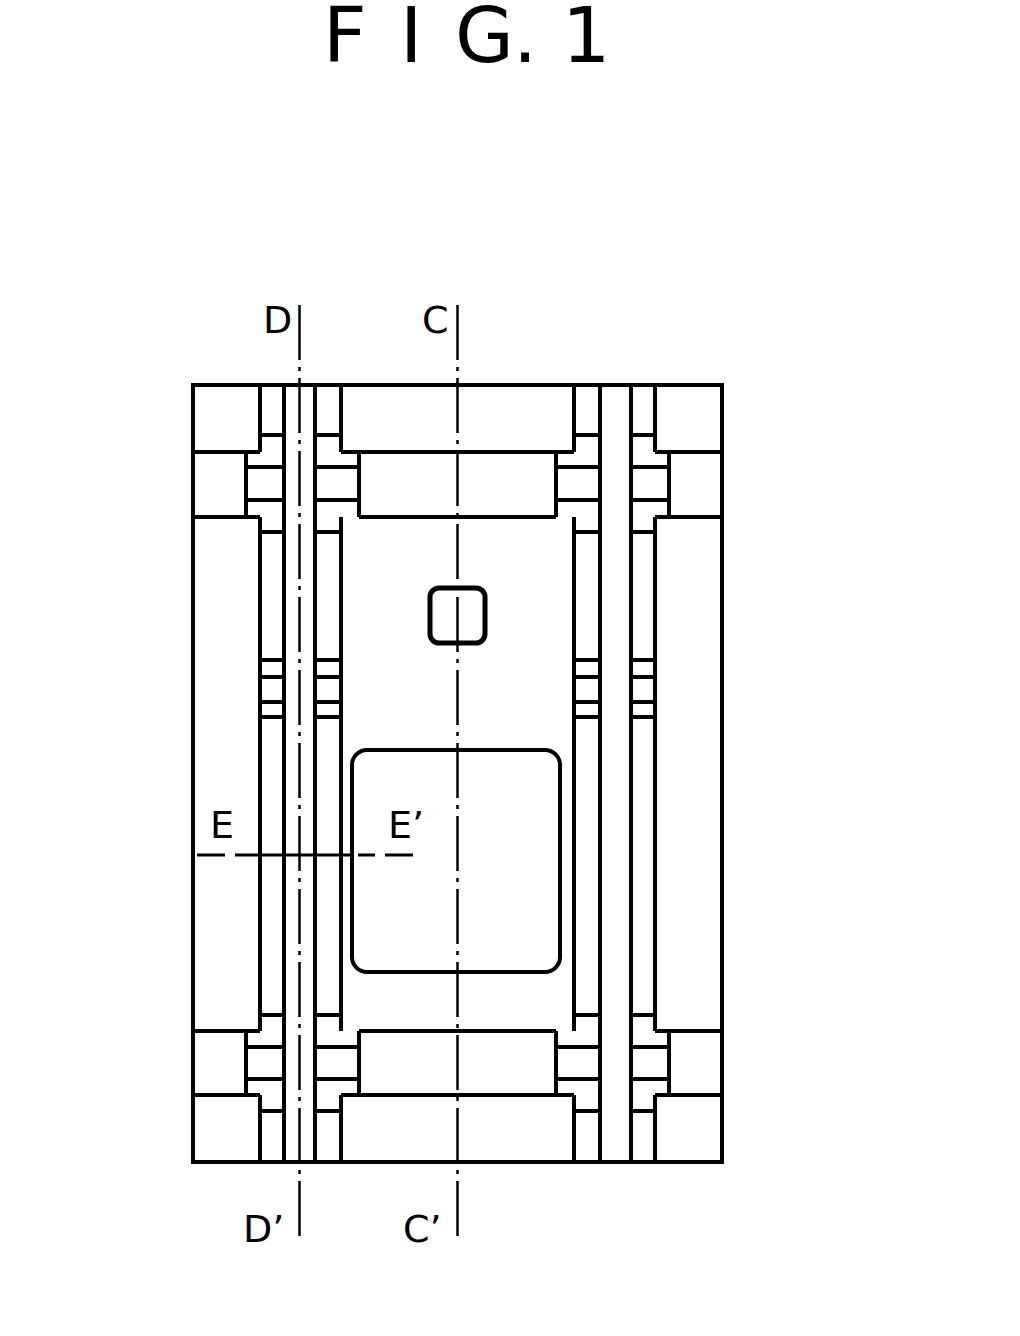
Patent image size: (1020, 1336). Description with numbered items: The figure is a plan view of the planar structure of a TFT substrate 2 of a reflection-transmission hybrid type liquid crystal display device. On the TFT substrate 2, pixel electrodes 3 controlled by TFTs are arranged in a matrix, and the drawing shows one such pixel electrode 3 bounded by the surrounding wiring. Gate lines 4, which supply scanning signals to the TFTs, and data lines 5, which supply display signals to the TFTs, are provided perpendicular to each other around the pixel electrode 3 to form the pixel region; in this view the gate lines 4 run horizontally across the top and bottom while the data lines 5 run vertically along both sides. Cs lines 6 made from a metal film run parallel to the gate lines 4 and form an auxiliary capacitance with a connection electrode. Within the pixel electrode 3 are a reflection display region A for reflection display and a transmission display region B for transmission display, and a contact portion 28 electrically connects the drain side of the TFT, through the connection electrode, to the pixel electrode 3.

The TFT substrate 2 is at (153, 462).
The pixel electrode 3 is at (810, 595).
The gate line 4 is at (265, 1064).
The data line 5 is at (612, 868).
The Cs line 6 is at (272, 692).
The contact portion 28 is at (428, 612).
The reflection display region A is at (525, 643).
The transmission display region B is at (525, 812).